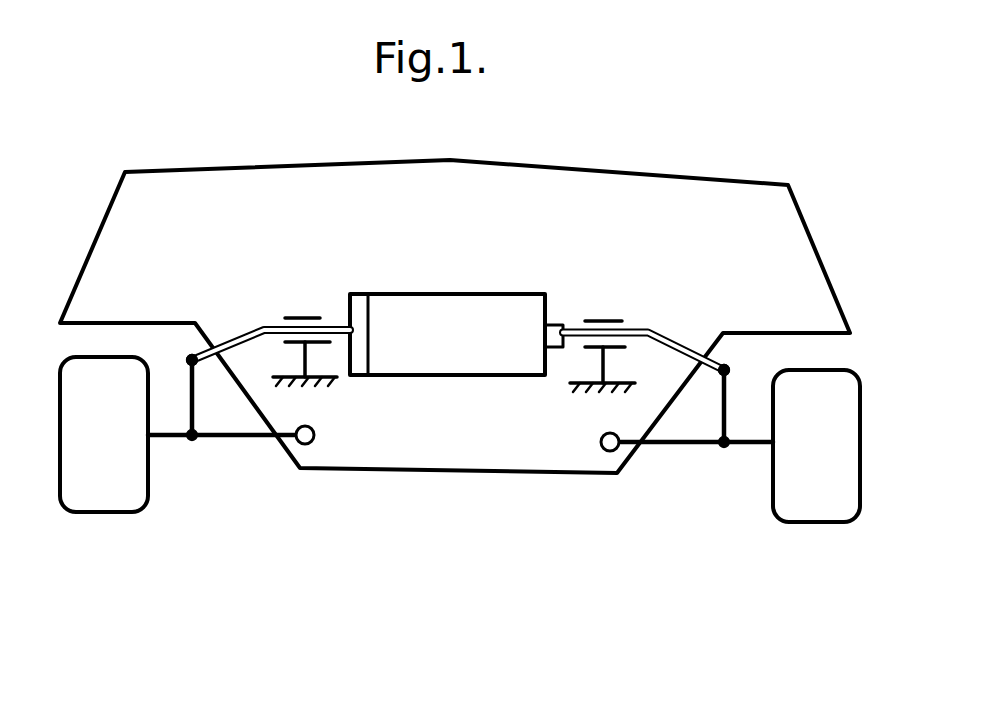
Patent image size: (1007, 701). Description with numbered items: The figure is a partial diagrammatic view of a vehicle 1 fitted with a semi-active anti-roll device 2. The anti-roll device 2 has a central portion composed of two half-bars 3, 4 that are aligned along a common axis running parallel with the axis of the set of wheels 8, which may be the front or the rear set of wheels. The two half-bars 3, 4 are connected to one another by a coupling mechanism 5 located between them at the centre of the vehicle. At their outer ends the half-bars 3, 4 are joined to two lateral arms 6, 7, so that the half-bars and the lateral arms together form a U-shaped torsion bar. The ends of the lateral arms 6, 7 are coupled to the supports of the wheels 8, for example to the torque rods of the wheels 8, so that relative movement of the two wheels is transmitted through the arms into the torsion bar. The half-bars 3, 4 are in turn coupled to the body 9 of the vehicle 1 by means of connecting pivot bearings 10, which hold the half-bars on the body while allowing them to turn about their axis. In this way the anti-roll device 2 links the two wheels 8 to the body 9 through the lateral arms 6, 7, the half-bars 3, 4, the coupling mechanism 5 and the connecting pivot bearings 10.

The vehicle 1 is at (198, 116).
The semi-active anti-roll device 2 is at (456, 274).
The half-bar 3 is at (332, 305).
The half-bar 4 is at (628, 328).
The coupling mechanism 5 is at (407, 289).
The lateral arm 6 is at (237, 342).
The lateral arm 7 is at (680, 340).
The wheels 8 is at (70, 385).
The body 9 is at (608, 170).
The connecting pivot bearings 10 is at (294, 313).